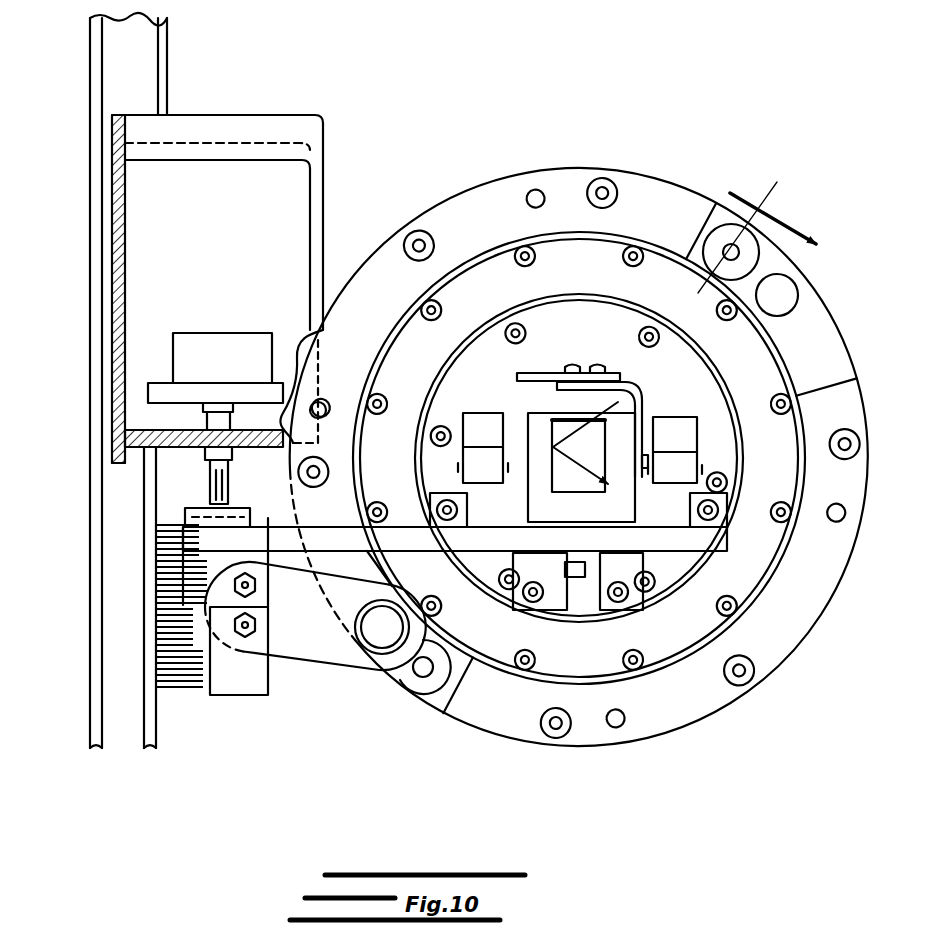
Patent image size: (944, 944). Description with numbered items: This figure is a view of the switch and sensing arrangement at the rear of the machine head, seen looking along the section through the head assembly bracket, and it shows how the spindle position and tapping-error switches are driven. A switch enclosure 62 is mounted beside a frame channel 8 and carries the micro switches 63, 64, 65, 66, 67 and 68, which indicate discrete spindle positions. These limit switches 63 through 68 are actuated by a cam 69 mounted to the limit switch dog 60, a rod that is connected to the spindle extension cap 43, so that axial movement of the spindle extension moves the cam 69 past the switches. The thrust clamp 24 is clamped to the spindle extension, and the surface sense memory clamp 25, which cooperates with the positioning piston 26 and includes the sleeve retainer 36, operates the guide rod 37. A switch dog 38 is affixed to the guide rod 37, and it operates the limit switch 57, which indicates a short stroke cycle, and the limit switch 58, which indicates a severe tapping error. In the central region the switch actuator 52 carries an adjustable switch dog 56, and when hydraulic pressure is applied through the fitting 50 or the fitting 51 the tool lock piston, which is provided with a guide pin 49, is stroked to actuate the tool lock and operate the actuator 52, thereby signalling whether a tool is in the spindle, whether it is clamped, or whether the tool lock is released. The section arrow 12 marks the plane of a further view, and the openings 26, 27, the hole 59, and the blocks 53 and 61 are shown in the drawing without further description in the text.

The frame channel 8 is at (170, 48).
The switch enclosure 62 is at (262, 115).
The micro switch 63 is at (218, 201).
The micro switch 64 is at (220, 219).
The micro switch 65 is at (220, 237).
The micro switch 66 is at (220, 255).
The micro switch 67 is at (221, 272).
The micro switch 68 is at (212, 355).
The cam 69 is at (242, 507).
The sleeve retainer 36 is at (483, 273).
The spindle extension cap 43 is at (563, 330).
The thrust clamp 24 is at (668, 195).
The surface sense memory clamp 25 is at (718, 207).
The section arrow 12 is at (684, 338).
The positioning piston 26 is at (752, 255).
The pin opening 27 is at (420, 688).
The hole 59 is at (790, 296).
The adjustable switch dog 56 is at (527, 375).
The switch actuator 52 is at (645, 392).
The fitting 51 is at (480, 420).
The fitting 50 is at (673, 428).
The guide pin 49 is at (578, 585).
The terminal block 53 is at (575, 467).
The terminal block 61 is at (612, 553).
The limit switch dog 60 is at (690, 556).
The limit switch 58 is at (150, 571).
The limit switch 57 is at (150, 654).
The switch dog 38 is at (306, 642).
The guide rod 37 is at (382, 626).